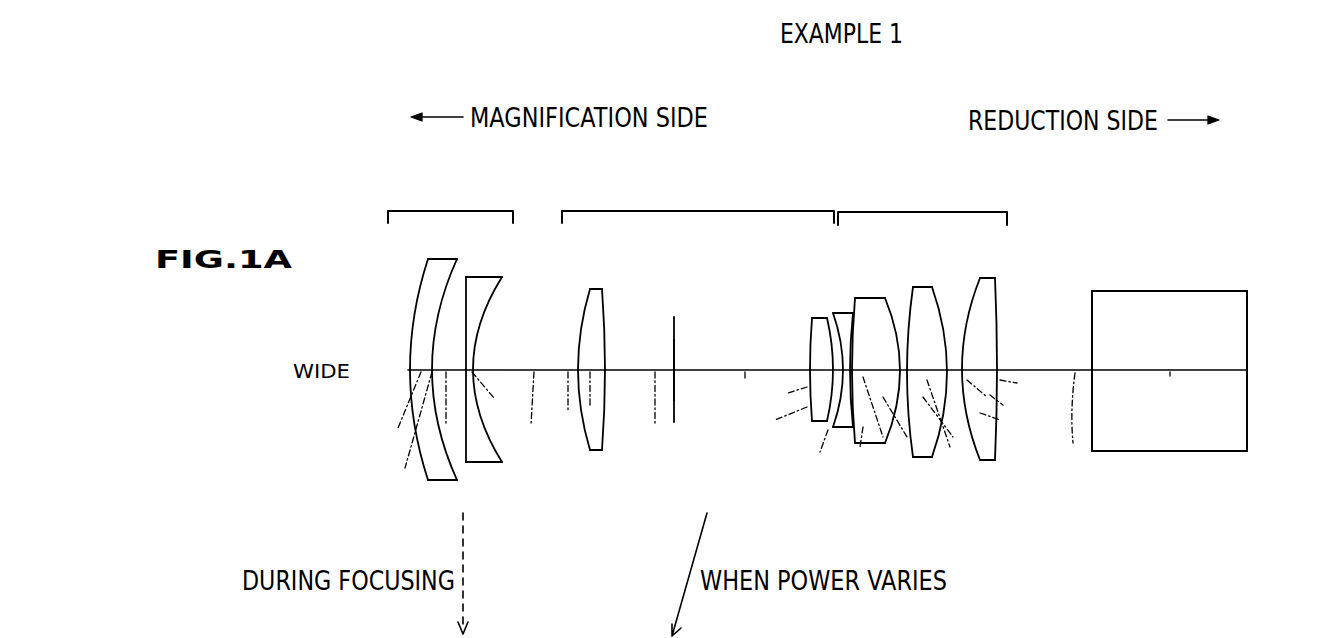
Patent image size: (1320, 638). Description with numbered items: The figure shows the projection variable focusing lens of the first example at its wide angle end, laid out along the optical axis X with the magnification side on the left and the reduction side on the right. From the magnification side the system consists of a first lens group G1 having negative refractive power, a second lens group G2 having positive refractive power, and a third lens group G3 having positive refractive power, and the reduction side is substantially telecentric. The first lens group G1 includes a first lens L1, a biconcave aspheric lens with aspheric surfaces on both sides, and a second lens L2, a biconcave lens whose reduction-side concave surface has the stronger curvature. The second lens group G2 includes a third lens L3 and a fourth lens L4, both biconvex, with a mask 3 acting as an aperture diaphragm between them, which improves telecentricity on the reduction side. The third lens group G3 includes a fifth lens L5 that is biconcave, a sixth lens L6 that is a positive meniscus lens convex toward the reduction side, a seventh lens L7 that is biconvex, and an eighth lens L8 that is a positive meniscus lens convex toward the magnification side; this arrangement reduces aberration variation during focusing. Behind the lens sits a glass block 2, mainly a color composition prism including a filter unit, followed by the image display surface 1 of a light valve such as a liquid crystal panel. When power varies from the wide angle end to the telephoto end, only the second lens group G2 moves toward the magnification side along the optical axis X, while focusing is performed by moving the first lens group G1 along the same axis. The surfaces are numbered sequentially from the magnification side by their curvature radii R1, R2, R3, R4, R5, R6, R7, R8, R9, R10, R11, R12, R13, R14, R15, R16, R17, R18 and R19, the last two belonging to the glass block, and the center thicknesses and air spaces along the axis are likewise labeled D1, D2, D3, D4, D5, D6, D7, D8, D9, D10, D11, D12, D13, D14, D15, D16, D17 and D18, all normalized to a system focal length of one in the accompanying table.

The first lens group G1 is at (450, 202).
The second lens group G2 is at (698, 202).
The third lens group G3 is at (922, 204).
The first lens L1 is at (409, 396).
The second lens L2 is at (500, 396).
The third lens L3 is at (592, 399).
The fourth lens L4 is at (790, 386).
The fifth lens L5 is at (812, 380).
The sixth lens L6 is at (873, 376).
The seventh lens L7 is at (935, 374).
The eighth lens L8 is at (1008, 372).
The curvature radius of lens surface R1 is at (410, 357).
The curvature radius of lens surface R2 is at (412, 367).
The curvature radius of lens surface R3 is at (466, 320).
The curvature radius of lens surface R4 is at (477, 358).
The curvature radius of lens surface R5 is at (575, 360).
The curvature radius of lens surface R6 is at (605, 358).
The curvature radius of lens surface R7 is at (675, 348).
The curvature radius of lens surface R8 is at (812, 363).
The curvature radius of lens surface R9 is at (791, 355).
The curvature radius of lens surface R10 is at (840, 350).
The curvature radius of lens surface R11 is at (827, 336).
The curvature radius of lens surface R12 is at (855, 350).
The curvature radius of lens surface R13 is at (893, 349).
The curvature radius of lens surface R14 is at (908, 330).
The curvature radius of lens surface R15 is at (952, 361).
The curvature radius of lens surface R16 is at (966, 340).
The curvature radius of lens surface R17 is at (993, 362).
The curvature radius of lens surface R18 is at (1092, 325).
The curvature radius of lens surface R19 is at (1270, 338).
The center thickness or air space D1 is at (399, 409).
The center thickness or air space D2 is at (414, 429).
The center thickness or air space D3 is at (497, 398).
The center thickness or air space D4 is at (554, 409).
The center thickness or air space D5 is at (605, 398).
The center thickness or air space D6 is at (650, 413).
The center thickness or air space D7 is at (721, 389).
The center thickness or air space D8 is at (780, 392).
The center thickness or air space D9 is at (777, 425).
The center thickness or air space D10 is at (817, 453).
The center thickness or air space D11 is at (865, 432).
The center thickness or air space D12 is at (916, 438).
The center thickness or air space D13 is at (958, 443).
The center thickness or air space D14 is at (1006, 418).
The center thickness or air space D15 is at (1019, 414).
The center thickness or air space D16 is at (1032, 390).
The center thickness or air space D17 is at (1077, 425).
The center thickness or air space D18 is at (1185, 389).
The optical axis X is at (529, 447).
The image display surface 1 is at (1250, 417).
The glass block 2 is at (1197, 443).
The mask 3 is at (674, 422).